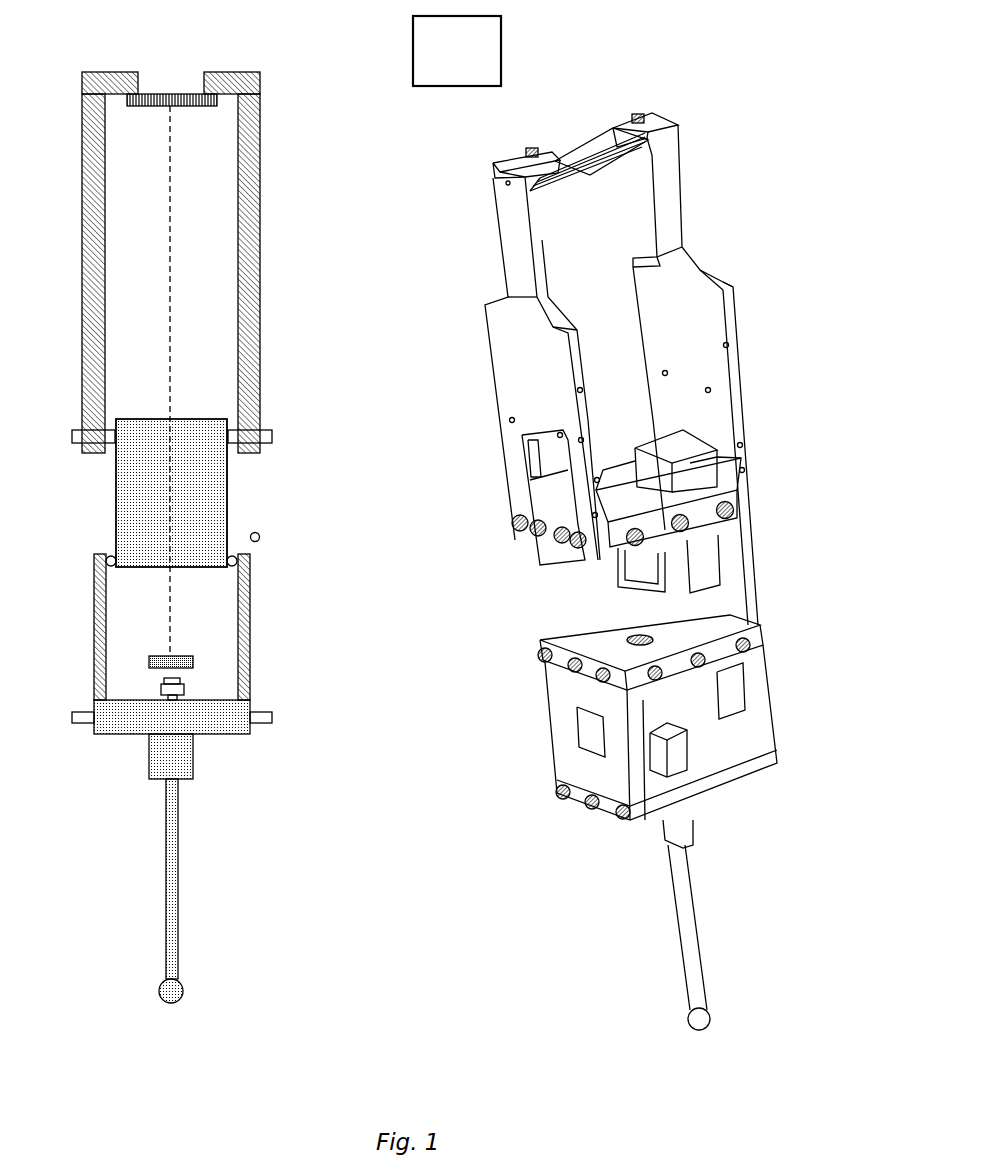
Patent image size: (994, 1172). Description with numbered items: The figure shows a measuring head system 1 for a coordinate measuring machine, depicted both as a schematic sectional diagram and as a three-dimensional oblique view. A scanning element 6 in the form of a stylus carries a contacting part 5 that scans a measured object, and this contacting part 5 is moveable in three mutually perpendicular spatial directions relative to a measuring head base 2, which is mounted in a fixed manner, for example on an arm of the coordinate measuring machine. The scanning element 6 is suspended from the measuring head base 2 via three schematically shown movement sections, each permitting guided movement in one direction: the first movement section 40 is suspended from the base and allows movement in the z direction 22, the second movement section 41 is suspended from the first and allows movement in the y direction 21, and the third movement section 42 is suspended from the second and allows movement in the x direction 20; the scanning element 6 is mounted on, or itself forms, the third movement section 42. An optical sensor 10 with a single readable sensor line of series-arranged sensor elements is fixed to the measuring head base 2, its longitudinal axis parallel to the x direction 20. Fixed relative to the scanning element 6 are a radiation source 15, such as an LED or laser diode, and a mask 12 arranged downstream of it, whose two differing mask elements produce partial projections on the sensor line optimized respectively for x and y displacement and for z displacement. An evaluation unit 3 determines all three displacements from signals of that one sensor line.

The measuring head system 1 is at (396, 180).
The measuring head base 2 is at (415, 350).
The evaluation unit 3 is at (462, 65).
The contacting part 5 is at (434, 1015).
The scanning element 6 is at (250, 872).
The optical sensor 10 is at (409, 106).
The mask 12 is at (401, 627).
The radiation source 15 is at (180, 688).
The x direction 20 is at (225, 757).
The y direction 21 is at (296, 545).
The z direction 22 is at (305, 372).
The first movement section 40 is at (461, 464).
The second movement section 41 is at (439, 680).
The third movement section 42 is at (387, 798).